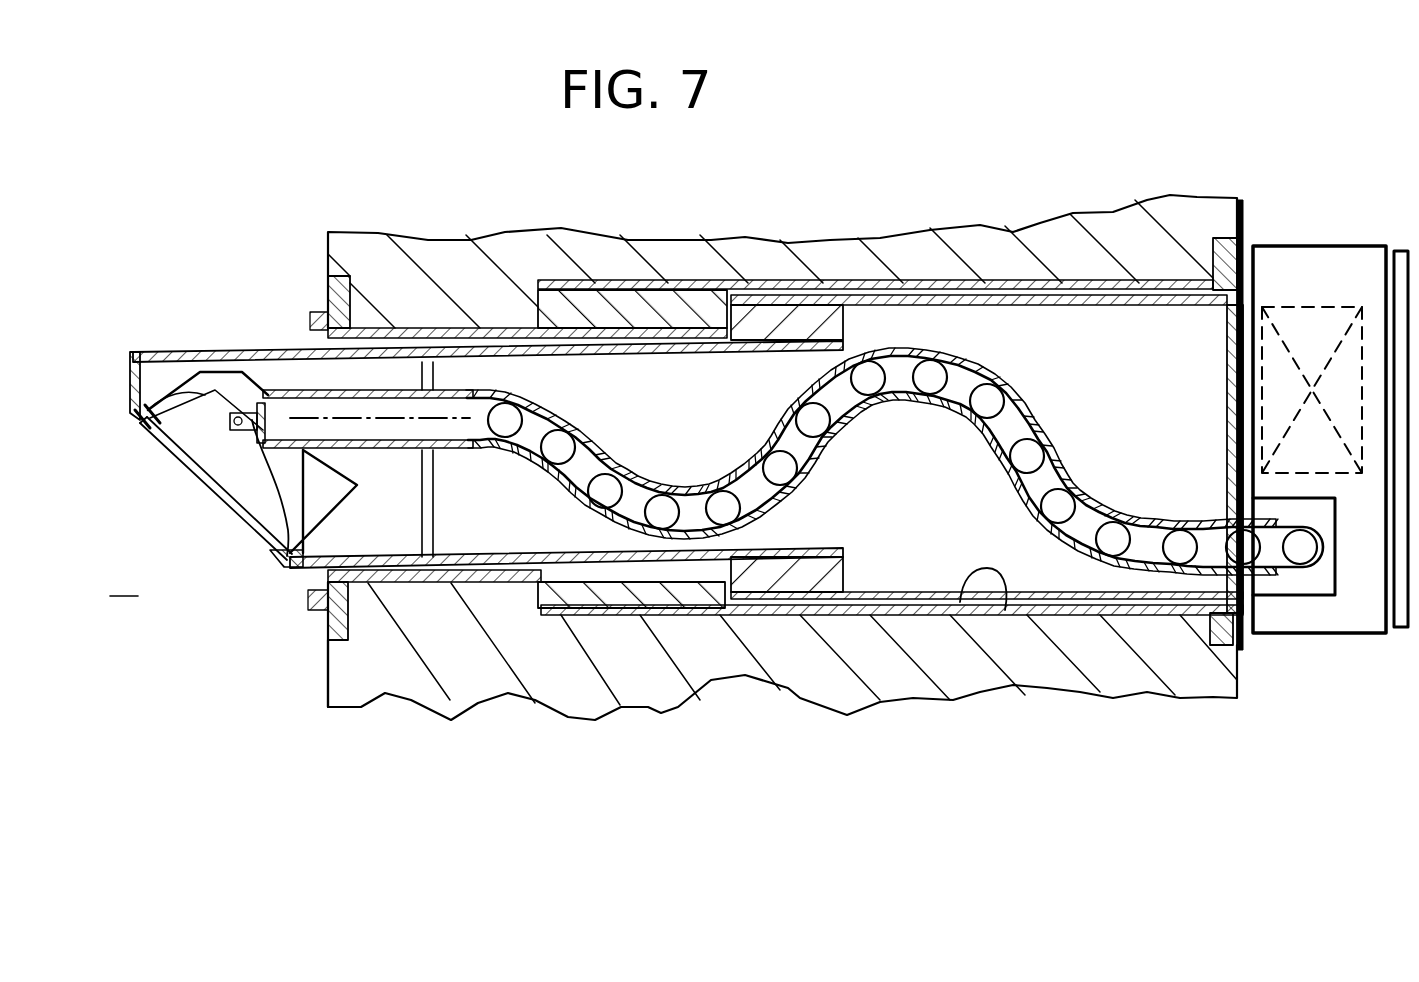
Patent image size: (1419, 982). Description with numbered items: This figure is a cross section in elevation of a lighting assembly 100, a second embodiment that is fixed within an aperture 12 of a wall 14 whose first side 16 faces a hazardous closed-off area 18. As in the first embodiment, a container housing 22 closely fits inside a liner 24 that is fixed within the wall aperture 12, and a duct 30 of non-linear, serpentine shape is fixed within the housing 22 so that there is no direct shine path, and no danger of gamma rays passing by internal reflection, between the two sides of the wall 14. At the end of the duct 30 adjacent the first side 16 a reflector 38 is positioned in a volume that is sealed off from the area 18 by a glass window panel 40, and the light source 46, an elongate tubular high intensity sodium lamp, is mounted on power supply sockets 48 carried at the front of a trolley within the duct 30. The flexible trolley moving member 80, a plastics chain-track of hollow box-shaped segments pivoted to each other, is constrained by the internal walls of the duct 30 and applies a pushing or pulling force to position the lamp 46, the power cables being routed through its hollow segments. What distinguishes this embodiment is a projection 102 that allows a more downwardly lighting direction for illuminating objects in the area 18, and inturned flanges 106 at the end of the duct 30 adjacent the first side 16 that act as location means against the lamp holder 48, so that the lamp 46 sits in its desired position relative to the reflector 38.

The lighting assembly 100 is at (1227, 176).
The wall 14 is at (688, 262).
The container housing 22 is at (790, 325).
The liner 24 is at (916, 274).
The projection 102 is at (127, 340).
The inturned flanges 106 is at (203, 372).
The duct 30 is at (316, 370).
The reflector 38 is at (182, 420).
The glass window panel 40 is at (198, 492).
The light source 46 is at (210, 472).
The hazardous closed-off area 18 is at (124, 580).
The power supply sockets 48 is at (255, 445).
The first side 16 is at (312, 685).
The flexible trolley moving member 80 is at (588, 498).
The aperture 12 is at (1005, 610).